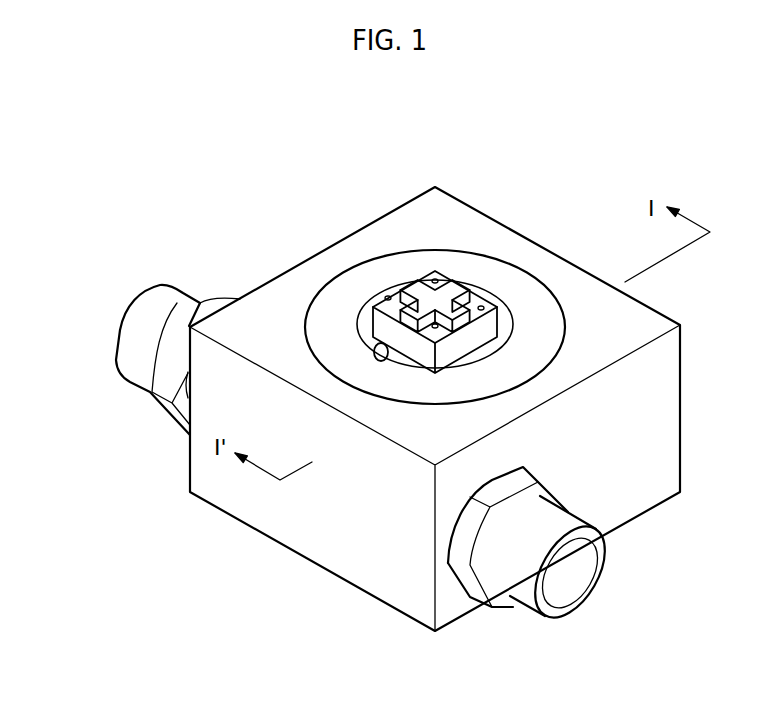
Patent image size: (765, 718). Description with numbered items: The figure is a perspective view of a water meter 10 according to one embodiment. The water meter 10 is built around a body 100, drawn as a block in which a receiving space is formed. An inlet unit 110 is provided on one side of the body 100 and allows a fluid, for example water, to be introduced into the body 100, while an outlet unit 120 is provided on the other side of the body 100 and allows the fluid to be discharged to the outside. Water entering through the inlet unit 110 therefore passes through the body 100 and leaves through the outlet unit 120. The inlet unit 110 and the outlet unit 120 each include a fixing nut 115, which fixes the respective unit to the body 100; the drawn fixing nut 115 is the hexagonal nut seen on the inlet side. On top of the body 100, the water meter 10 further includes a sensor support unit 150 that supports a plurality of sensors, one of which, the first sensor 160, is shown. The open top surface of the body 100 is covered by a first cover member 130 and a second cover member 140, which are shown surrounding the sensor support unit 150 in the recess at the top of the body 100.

The water meter 10 is at (237, 112).
The body 100 is at (537, 233).
The inlet unit 110 is at (148, 300).
The fixing nut 115 is at (172, 357).
The outlet unit 120 is at (565, 595).
The first cover member 130 is at (550, 310).
The second cover member 140 is at (452, 292).
The sensor support unit 150 is at (403, 318).
The first sensor 160 is at (385, 358).